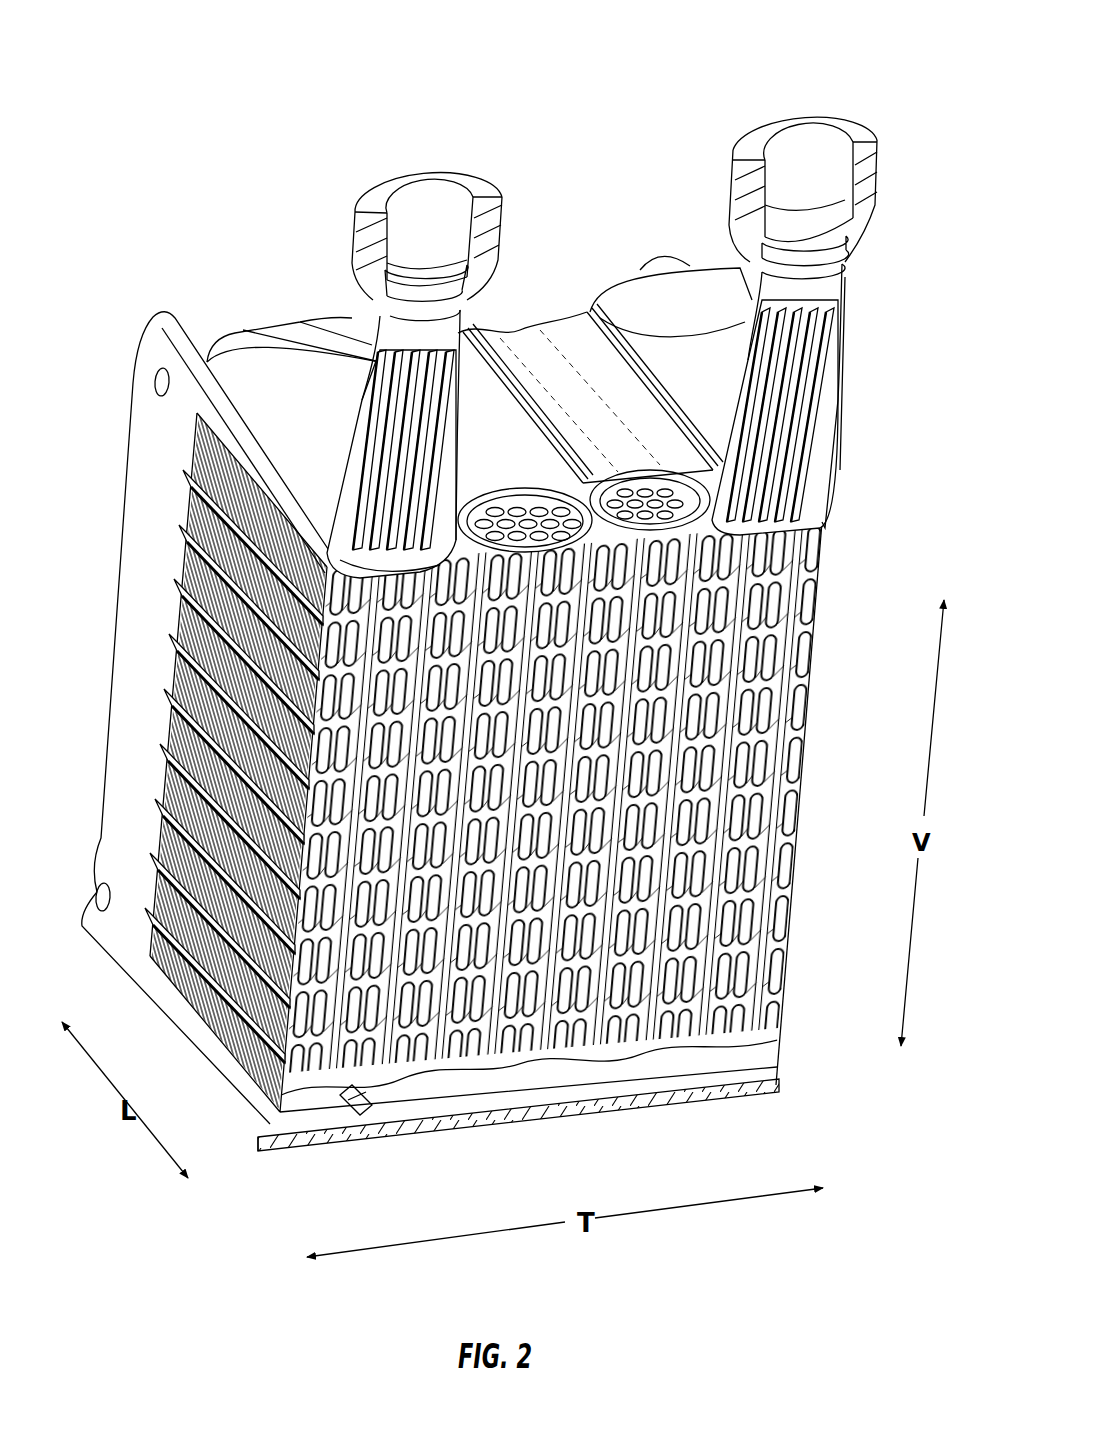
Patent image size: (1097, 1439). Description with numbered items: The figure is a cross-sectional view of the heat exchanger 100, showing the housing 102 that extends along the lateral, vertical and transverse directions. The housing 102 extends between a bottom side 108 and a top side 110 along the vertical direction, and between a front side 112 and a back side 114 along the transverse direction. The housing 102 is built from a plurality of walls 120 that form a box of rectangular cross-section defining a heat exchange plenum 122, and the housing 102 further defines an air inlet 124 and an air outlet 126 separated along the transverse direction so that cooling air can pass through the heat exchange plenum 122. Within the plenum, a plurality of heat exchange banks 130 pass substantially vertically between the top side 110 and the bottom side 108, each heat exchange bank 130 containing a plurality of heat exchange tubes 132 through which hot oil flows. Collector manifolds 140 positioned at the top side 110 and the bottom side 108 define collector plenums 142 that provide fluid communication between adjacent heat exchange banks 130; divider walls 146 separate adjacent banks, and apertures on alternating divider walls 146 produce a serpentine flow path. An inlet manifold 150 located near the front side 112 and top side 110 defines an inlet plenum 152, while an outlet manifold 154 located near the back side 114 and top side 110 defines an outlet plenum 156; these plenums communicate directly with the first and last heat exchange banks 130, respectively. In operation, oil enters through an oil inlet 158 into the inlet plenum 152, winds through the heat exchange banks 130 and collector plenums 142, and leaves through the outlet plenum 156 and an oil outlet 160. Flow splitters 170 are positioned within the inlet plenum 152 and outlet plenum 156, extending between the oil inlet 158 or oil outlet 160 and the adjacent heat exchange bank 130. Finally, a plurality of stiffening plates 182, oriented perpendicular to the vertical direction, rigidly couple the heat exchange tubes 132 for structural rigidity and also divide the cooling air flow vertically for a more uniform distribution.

The heat exchanger 100 is at (841, 56).
The housing 102 is at (548, 338).
The bottom side 108 is at (694, 1094).
The top side 110 is at (578, 375).
The front side 112 is at (108, 862).
The back side 114 is at (850, 470).
The walls 120 is at (155, 583).
The heat exchange plenum 122 is at (335, 718).
The air inlet 124 is at (808, 752).
The air outlet 126 is at (205, 1019).
The heat exchange banks 130 is at (666, 962).
The heat exchange tubes 132 is at (198, 426).
The collector manifolds 140 is at (594, 492).
The collector plenums 142 is at (650, 494).
The divider walls 146 is at (462, 525).
The inlet manifold 150 is at (262, 340).
The inlet plenum 152 is at (372, 500).
The outlet manifold 154 is at (850, 372).
The outlet plenum 156 is at (826, 408).
The oil inlet 158 is at (429, 202).
The oil outlet 160 is at (798, 146).
The flow splitters 170 is at (385, 375).
The stiffening plates 182 is at (166, 760).